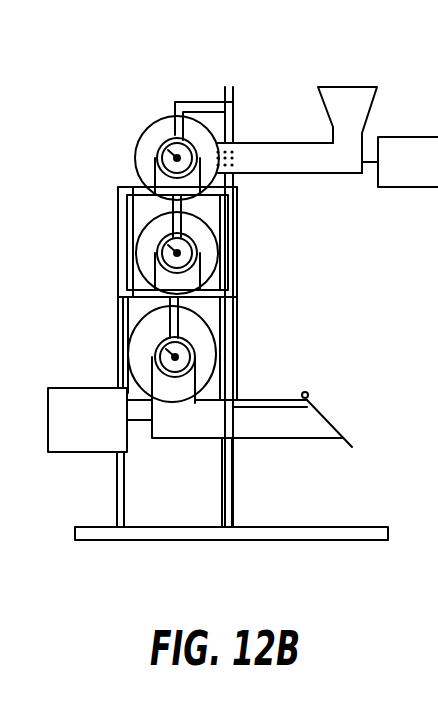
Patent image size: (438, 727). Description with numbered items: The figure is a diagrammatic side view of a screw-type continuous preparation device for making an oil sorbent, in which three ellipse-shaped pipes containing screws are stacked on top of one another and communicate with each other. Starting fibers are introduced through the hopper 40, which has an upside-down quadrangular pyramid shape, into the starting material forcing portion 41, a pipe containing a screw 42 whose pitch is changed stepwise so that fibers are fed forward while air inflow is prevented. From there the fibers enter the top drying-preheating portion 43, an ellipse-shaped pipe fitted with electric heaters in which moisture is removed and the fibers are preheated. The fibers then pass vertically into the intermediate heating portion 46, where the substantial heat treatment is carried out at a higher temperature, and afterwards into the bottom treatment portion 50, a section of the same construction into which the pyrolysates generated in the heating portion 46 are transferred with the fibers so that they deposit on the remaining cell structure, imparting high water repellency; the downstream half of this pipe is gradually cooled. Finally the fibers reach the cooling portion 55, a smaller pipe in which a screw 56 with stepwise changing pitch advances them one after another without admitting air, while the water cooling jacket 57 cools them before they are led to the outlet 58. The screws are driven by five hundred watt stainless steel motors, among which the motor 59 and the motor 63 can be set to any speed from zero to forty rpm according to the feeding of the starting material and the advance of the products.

The hopper 40 is at (377, 88).
The starting material forcing portion 41 is at (250, 143).
The screw 42 is at (288, 158).
The drying-preheating portion 43 is at (163, 155).
The heating portion 46 is at (152, 246).
The treatment portion 50 is at (118, 343).
The cooling portion 55 is at (255, 442).
The screw 56 is at (272, 422).
The water cooling jacket 57 is at (252, 407).
The outlet 58 is at (330, 418).
The motor 59 is at (408, 162).
The motor 63 is at (100, 457).